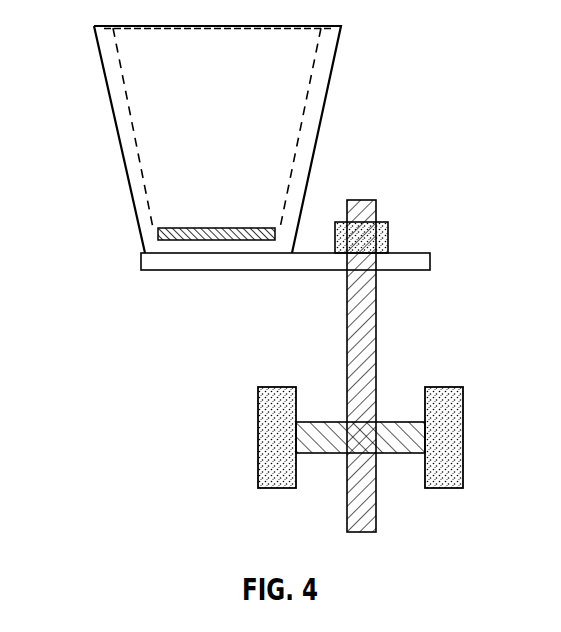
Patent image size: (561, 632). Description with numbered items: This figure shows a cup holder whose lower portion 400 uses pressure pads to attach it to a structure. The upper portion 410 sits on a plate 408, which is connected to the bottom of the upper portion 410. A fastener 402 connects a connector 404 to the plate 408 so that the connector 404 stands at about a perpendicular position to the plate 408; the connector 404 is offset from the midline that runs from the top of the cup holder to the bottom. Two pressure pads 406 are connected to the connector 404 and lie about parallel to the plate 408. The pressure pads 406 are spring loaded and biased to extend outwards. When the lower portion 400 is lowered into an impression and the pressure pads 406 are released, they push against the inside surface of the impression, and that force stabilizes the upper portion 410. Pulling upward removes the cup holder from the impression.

The lower portion 400 is at (305, 258).
The fastener 402 is at (392, 232).
The connector 404 is at (367, 340).
The pressure pads 406 is at (275, 480).
The plate 408 is at (192, 263).
The upper portion 410 is at (165, 96).